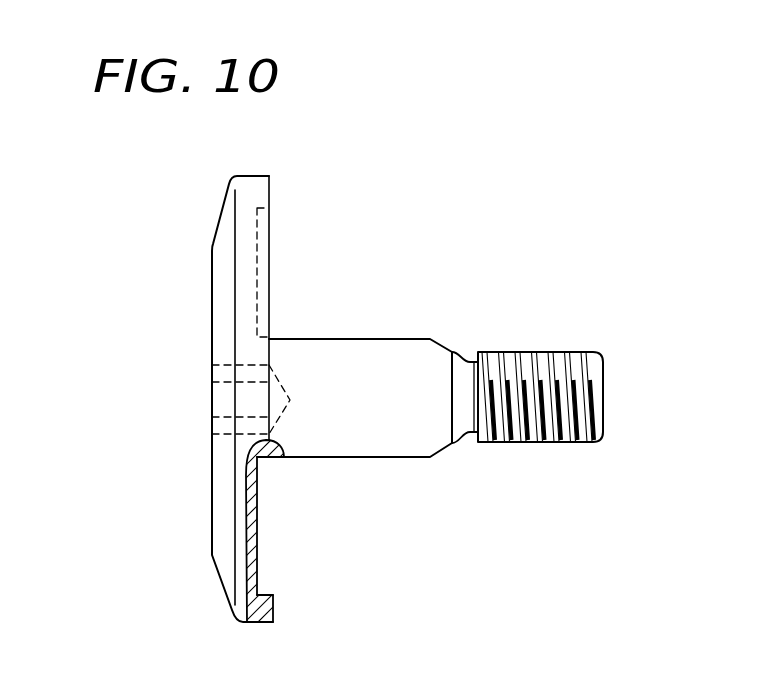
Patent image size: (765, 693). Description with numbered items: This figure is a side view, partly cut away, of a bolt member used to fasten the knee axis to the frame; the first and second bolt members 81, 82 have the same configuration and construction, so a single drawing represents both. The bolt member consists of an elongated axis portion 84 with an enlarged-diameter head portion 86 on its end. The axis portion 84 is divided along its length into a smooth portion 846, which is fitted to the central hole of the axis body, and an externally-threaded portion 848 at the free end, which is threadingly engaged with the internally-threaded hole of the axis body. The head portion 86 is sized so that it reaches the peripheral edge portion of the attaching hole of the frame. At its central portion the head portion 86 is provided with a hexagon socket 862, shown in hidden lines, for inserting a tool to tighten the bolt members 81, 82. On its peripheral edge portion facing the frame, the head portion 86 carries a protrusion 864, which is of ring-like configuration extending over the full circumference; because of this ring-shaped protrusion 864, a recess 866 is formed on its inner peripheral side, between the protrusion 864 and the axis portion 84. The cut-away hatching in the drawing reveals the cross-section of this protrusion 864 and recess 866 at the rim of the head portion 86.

The first bolt member 81 is at (360, 412).
The second bolt member 82 is at (360, 421).
The axis portion 84 is at (430, 418).
The portion fitted to the central hole 846 is at (385, 339).
The externally-threaded portion 848 is at (555, 435).
The head portion 86 is at (222, 318).
The hexagon socket 862 is at (222, 434).
The protrusion 864 is at (268, 610).
The recess 866 is at (264, 590).